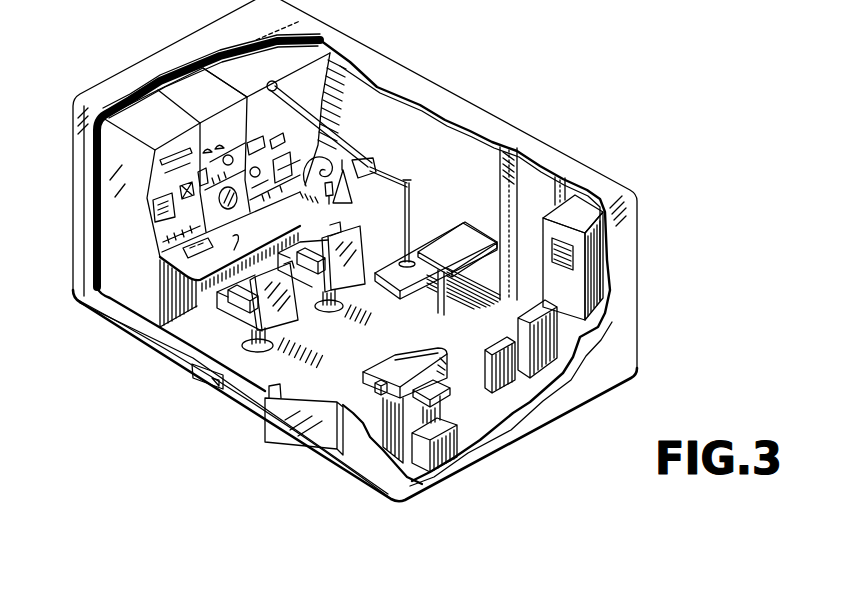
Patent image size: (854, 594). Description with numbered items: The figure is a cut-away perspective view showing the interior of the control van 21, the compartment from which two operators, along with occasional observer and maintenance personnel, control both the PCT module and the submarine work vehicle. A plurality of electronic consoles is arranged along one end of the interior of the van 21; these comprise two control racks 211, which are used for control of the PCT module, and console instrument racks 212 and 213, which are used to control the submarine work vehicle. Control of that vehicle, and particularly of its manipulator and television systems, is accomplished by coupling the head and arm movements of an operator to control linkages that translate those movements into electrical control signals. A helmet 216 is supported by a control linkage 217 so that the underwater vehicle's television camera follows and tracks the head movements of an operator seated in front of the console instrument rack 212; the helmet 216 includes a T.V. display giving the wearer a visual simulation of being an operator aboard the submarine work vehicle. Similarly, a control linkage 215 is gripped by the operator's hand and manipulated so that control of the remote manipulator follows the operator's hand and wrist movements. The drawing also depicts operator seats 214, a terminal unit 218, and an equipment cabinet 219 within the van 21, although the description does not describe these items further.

The control van 21 is at (590, 88).
The control racks 211 is at (161, 130).
The console instrument rack 212 is at (258, 80).
The console instrument rack 213 is at (313, 47).
The operator seat 214 is at (364, 244).
The control linkage 215 is at (388, 168).
The helmet 216 is at (332, 211).
The control linkage 217 is at (335, 140).
The computer terminal 218 is at (442, 352).
The equipment cabinet 219 is at (596, 223).